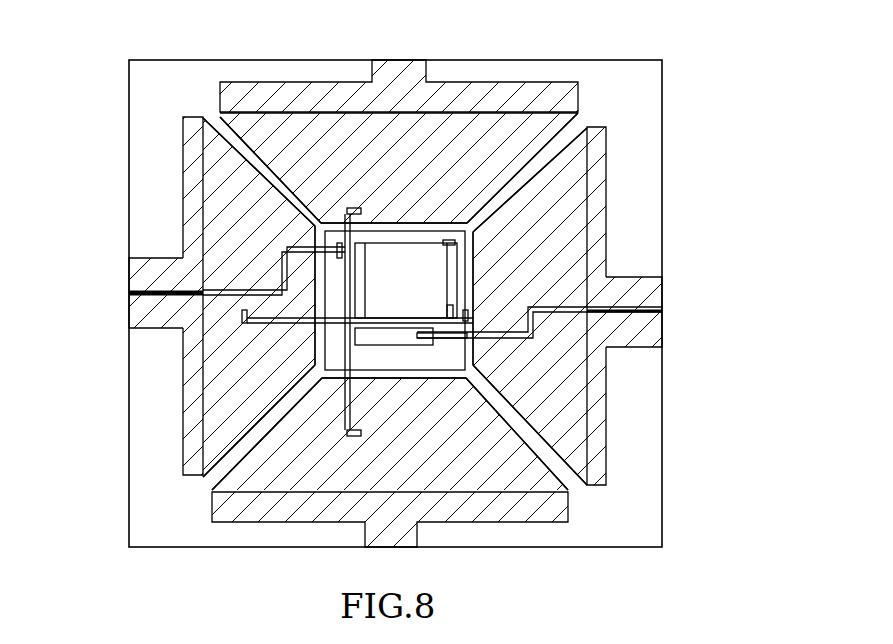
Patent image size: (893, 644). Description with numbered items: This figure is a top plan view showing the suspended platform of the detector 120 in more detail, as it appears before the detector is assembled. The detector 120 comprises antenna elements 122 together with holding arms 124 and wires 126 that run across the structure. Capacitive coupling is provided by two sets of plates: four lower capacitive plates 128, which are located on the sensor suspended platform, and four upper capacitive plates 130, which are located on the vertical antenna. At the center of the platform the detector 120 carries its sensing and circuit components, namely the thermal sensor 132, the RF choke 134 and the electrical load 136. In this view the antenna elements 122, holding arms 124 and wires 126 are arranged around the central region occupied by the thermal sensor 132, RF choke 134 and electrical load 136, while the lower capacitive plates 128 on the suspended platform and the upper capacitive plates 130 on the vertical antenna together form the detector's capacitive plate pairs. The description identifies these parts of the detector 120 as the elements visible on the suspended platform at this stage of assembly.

The detector 120 is at (197, 556).
The antenna elements 122 is at (634, 277).
The holding arms 124 is at (613, 315).
The wires 126 is at (635, 304).
The lower capacitive plates 128 is at (573, 486).
The upper capacitive plates 130 is at (600, 198).
The thermal sensor 132 is at (402, 243).
The RF choke 134 is at (396, 347).
The electrical load 136 is at (345, 335).